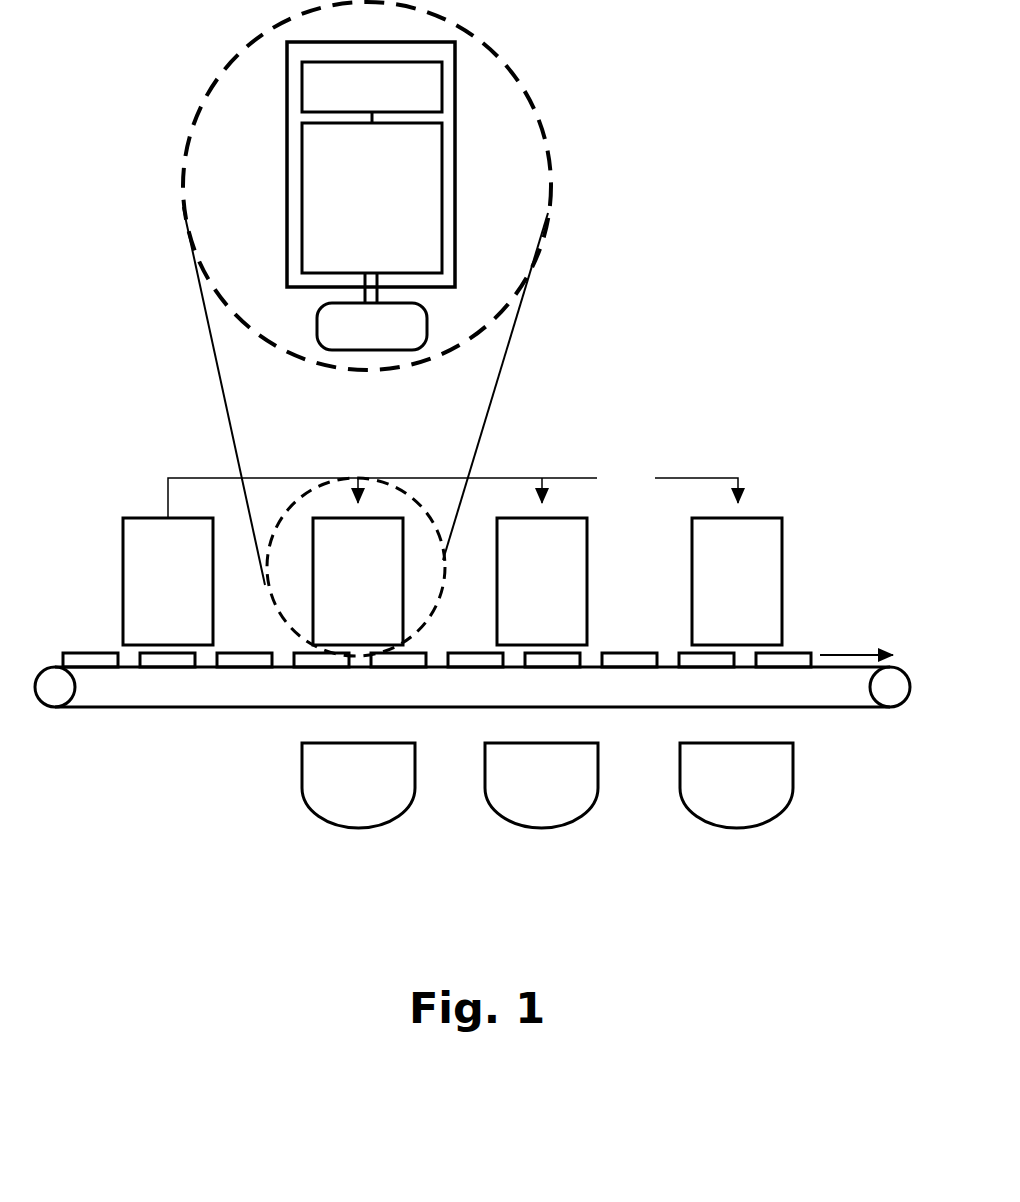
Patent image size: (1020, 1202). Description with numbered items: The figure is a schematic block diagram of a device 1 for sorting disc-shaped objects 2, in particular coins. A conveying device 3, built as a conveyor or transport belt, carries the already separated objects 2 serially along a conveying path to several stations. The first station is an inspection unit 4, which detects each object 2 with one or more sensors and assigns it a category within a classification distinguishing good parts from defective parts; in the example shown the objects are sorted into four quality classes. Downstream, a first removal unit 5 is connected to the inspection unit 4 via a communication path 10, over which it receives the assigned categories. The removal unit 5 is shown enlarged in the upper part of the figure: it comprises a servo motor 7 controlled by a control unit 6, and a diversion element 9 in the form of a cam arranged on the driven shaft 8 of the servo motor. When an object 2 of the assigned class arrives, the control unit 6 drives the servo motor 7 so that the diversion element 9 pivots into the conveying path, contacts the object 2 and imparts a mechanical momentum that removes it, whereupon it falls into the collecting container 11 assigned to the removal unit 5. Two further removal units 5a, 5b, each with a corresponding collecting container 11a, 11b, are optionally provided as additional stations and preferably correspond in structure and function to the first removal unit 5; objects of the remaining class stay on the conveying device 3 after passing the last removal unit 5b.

The device for sorting disc-shaped objects 1 is at (836, 477).
The disc-shaped objects 2 is at (229, 677).
The conveying device 3 is at (464, 702).
The inspection unit 4 is at (158, 597).
The removal unit 5 is at (349, 597).
The additional removal unit 5a is at (525, 597).
The additional removal unit 5b is at (720, 597).
The control unit 6 is at (363, 105).
The servo motor 7 is at (363, 215).
The driven shaft 8 is at (378, 296).
The diversion element 9 is at (363, 342).
The communication path 10 is at (453, 490).
The collecting container 11 is at (344, 803).
The collecting container 11a is at (521, 803).
The collecting container 11b is at (716, 803).